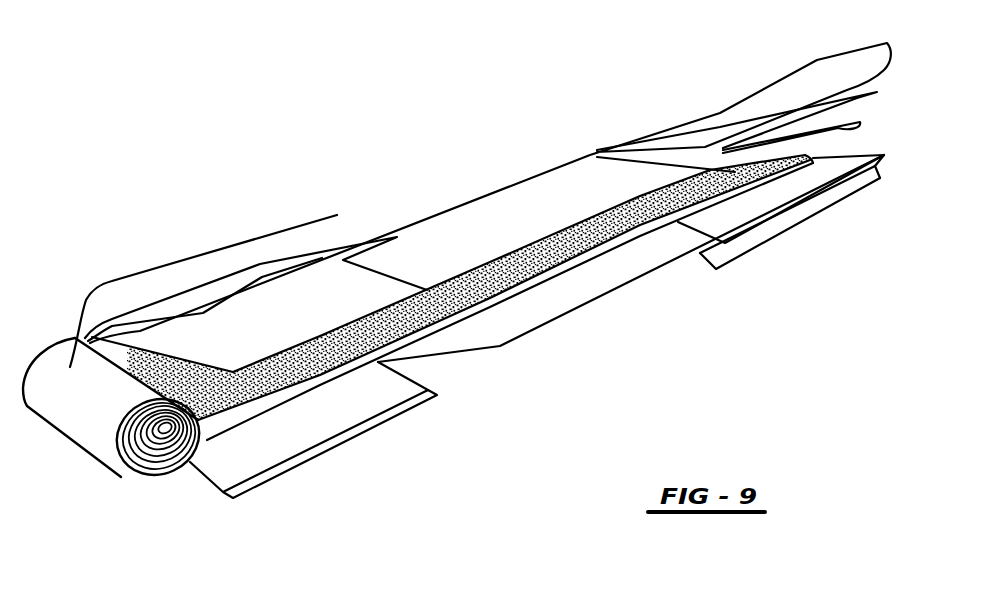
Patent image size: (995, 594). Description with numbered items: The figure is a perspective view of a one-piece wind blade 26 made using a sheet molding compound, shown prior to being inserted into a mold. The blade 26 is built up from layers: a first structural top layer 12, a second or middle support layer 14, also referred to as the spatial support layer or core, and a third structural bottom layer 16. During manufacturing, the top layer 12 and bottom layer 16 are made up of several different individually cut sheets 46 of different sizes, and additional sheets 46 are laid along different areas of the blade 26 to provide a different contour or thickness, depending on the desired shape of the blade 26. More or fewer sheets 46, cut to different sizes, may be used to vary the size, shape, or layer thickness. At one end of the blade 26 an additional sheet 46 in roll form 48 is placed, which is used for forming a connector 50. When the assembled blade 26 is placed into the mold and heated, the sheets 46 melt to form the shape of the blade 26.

The top layer 12 is at (321, 207).
The middle support layer 14 is at (582, 232).
The bottom layer 16 is at (425, 414).
The one-piece wind blade 26 is at (515, 154).
The individually cut sheets 46 is at (60, 342).
The sheet in roll form 48 is at (107, 468).
The connector 50 is at (144, 0).